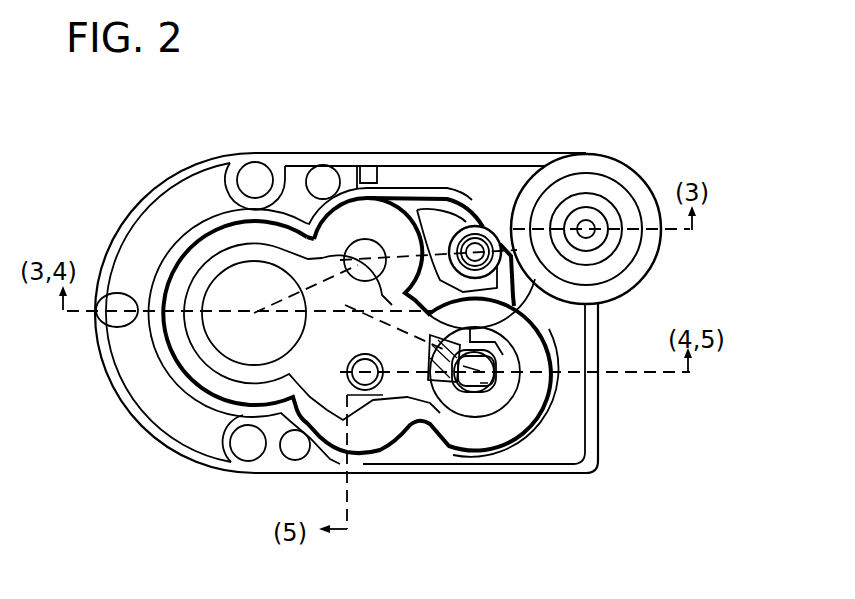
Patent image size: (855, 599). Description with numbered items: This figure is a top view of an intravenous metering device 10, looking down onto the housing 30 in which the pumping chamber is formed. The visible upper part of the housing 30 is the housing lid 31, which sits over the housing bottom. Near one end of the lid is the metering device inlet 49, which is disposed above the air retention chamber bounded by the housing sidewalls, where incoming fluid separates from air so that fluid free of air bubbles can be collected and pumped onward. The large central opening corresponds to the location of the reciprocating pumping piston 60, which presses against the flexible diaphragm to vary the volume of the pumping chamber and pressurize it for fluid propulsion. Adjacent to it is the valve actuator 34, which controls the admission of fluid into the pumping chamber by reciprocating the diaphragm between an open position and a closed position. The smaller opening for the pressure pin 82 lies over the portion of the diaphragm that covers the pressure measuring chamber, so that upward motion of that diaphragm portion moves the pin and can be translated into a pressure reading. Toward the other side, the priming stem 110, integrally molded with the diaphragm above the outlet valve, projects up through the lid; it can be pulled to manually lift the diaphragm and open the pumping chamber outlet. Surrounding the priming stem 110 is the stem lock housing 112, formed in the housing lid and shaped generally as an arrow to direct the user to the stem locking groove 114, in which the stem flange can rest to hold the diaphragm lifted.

The intravenous metering device 10 is at (345, 339).
The housing 30 is at (114, 466).
The housing lid 31 is at (355, 223).
The valve actuator 34 is at (381, 250).
The metering device inlet 49 is at (477, 226).
The pumping piston 60 is at (248, 172).
The pressure pin 82 is at (375, 387).
The priming stem 110 is at (545, 422).
The stem lock housing 112 is at (505, 385).
The stem locking groove 114 is at (432, 383).